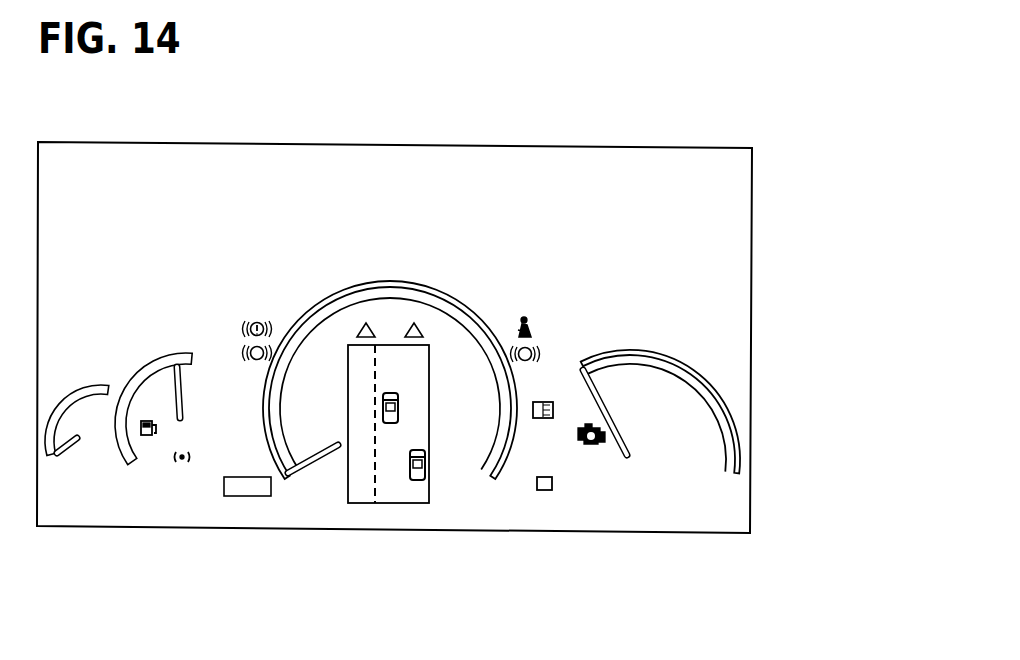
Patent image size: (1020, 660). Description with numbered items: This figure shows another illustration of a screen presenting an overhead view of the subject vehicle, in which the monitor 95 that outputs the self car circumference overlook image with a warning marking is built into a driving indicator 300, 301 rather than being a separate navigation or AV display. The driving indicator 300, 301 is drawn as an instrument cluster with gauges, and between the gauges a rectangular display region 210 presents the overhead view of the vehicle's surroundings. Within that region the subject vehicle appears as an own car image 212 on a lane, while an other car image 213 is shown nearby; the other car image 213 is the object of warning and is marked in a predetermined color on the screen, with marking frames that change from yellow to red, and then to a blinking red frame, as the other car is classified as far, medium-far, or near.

The monitor 95 is at (702, 513).
The driving indicator 300 is at (586, 156).
The driving indicator 301 is at (462, 307).
The vehicle surroundings display region 210 is at (415, 410).
The own vehicle icon 212 is at (381, 418).
The other car image 213 is at (410, 472).